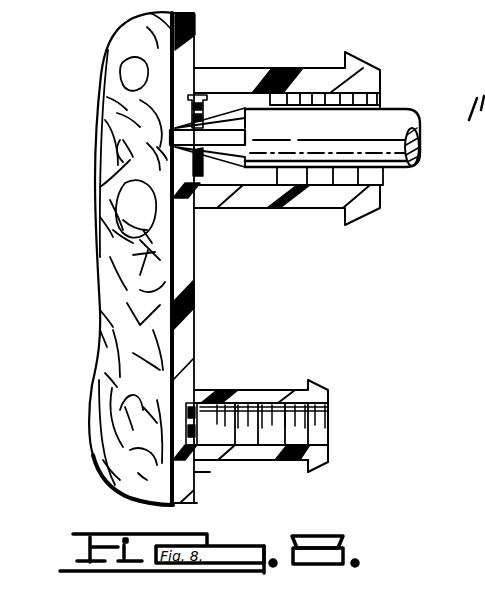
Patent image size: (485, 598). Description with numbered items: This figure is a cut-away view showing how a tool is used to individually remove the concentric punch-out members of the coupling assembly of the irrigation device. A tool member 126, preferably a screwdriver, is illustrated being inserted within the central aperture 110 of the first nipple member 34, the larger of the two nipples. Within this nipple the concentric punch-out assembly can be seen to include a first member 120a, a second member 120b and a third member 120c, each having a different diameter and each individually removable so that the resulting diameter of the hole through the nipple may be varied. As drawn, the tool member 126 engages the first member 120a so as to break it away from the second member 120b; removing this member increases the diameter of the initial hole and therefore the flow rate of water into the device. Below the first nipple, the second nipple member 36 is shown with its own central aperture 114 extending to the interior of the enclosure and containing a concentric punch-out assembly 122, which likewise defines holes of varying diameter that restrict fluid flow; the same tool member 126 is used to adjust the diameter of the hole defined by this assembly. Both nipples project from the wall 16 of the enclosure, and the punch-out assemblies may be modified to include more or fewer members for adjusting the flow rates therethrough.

The wall 16 is at (195, 325).
The first nipple member 34 is at (312, 80).
The second nipple member 36 is at (252, 461).
The central aperture 110 is at (323, 125).
The central aperture 114 is at (343, 420).
The first member 120a is at (190, 120).
The second member 120b is at (193, 113).
The third member 120c is at (210, 96).
The concentric punch-out assembly 122 is at (206, 422).
The tool member 126 is at (403, 118).